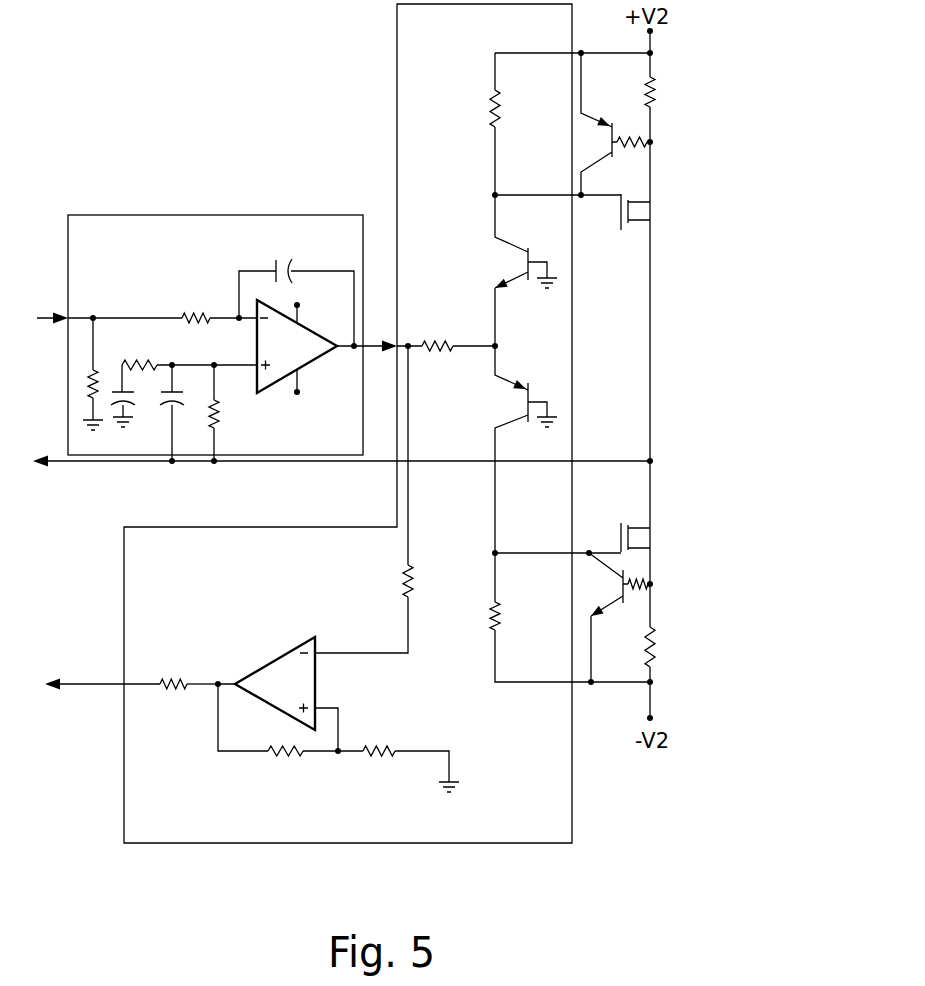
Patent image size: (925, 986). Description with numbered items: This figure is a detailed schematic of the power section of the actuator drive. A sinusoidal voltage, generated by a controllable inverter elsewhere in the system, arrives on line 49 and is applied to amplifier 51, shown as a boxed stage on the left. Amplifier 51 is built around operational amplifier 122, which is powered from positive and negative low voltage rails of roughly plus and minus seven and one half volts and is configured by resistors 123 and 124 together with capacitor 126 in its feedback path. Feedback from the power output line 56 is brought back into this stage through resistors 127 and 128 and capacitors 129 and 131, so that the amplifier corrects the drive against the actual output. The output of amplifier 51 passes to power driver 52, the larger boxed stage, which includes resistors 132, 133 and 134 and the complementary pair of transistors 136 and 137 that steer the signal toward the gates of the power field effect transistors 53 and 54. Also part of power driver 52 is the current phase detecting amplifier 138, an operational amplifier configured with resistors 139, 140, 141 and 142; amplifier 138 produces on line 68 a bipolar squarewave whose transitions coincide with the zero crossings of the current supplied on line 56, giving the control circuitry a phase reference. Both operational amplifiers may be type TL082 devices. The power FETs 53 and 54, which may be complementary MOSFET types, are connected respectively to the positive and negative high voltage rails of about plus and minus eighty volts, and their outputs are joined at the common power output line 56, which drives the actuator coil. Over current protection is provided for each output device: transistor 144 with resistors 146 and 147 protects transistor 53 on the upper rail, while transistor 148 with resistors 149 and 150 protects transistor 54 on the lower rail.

The line 49 is at (46, 321).
The amplifier 51 is at (148, 262).
The power driver 52 is at (207, 580).
The power field effect transistor 53 is at (645, 213).
The power field effect transistor 54 is at (645, 540).
The power output line 56 is at (57, 466).
The line 68 is at (108, 689).
The operational amplifier 122 is at (272, 373).
The resistor 123 is at (102, 373).
The resistor 124 is at (184, 315).
The capacitor 126 is at (323, 239).
The resistor 127 is at (157, 363).
The resistor 128 is at (220, 408).
The capacitor 129 is at (185, 398).
The capacitor 131 is at (113, 419).
The resistor 132 is at (500, 108).
The resistor 133 is at (422, 340).
The resistor 134 is at (508, 614).
The transistor 136 is at (537, 232).
The transistor 137 is at (520, 405).
The current phase detecting amplifier 138 is at (278, 672).
The resistor 139 is at (403, 585).
The resistor 140 is at (272, 753).
The resistor 141 is at (375, 748).
The resistor 142 is at (168, 680).
The transistor 144 is at (623, 100).
The resistor 146 is at (630, 152).
The resistor 147 is at (655, 105).
The transistor 148 is at (620, 587).
The resistor 149 is at (650, 591).
The resistor 150 is at (660, 657).